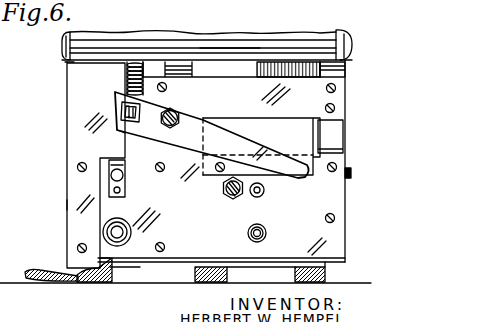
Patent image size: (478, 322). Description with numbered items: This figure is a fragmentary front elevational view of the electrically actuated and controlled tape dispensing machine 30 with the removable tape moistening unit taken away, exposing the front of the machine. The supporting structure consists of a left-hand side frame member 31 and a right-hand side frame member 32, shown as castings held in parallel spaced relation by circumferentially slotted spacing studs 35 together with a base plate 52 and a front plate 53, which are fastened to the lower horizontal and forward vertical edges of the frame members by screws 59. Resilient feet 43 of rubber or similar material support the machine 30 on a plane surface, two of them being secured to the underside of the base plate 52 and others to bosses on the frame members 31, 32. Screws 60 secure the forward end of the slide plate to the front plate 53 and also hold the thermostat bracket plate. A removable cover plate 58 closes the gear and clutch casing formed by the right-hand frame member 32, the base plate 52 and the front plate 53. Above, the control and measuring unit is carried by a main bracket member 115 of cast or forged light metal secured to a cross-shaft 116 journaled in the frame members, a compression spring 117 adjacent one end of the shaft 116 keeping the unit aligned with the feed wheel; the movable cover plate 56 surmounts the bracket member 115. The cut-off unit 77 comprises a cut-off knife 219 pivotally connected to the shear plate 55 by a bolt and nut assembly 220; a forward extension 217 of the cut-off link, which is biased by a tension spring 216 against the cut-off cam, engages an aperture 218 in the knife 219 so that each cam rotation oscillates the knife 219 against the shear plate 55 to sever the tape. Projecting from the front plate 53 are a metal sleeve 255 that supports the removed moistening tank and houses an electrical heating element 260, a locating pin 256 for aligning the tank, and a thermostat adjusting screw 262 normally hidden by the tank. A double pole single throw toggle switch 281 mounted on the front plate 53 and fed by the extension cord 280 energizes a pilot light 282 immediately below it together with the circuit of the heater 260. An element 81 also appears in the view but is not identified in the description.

The tape dispensing machine 30 is at (58, 203).
The left-hand side frame member 31 is at (321, 27).
The right-hand side frame member 32 is at (65, 59).
The spacing studs 35 is at (351, 172).
The foot 43 is at (205, 267).
The base plate 52 is at (258, 265).
The front plate 53 is at (318, 241).
The shear plate 55 is at (326, 98).
The movable cover plate 56 is at (229, 45).
The removable cover plate 58 is at (82, 121).
The screws 59 is at (162, 243).
The screws 60 is at (218, 173).
The cut-off unit 77 is at (118, 133).
The base strip 81 is at (275, 266).
The main bracket member 115 is at (208, 68).
The cross-shaft 116 is at (347, 62).
The compression spring 117 is at (275, 63).
The tension spring 216 is at (140, 62).
The forward extension 217 is at (122, 112).
The aperture 218 is at (122, 103).
The cut-off knife 219 is at (176, 109).
The bolt and nut assembly 220 is at (190, 117).
The metal sleeve 255 is at (250, 231).
The locating pin 256 is at (259, 182).
The electrical heating element 260 is at (248, 238).
The screw 262 is at (236, 178).
The electrical extension cord 280 is at (47, 273).
The toggle switch 281 is at (108, 181).
The pilot light 282 is at (104, 232).